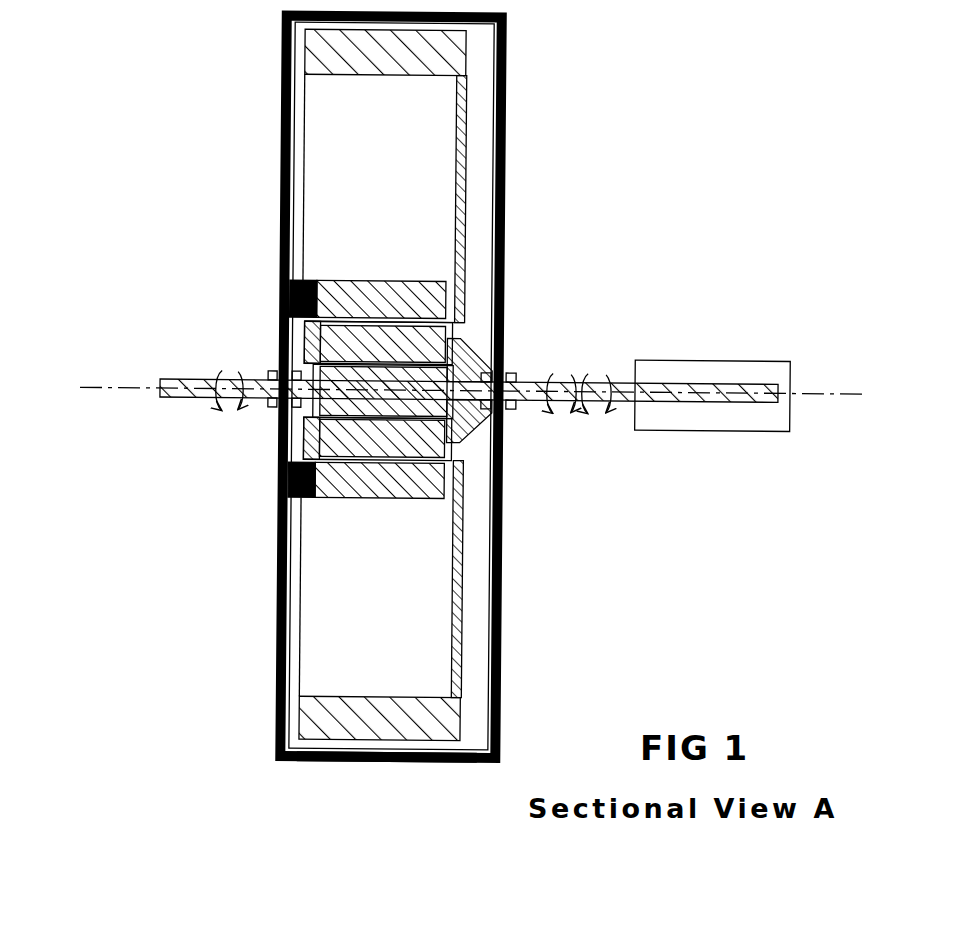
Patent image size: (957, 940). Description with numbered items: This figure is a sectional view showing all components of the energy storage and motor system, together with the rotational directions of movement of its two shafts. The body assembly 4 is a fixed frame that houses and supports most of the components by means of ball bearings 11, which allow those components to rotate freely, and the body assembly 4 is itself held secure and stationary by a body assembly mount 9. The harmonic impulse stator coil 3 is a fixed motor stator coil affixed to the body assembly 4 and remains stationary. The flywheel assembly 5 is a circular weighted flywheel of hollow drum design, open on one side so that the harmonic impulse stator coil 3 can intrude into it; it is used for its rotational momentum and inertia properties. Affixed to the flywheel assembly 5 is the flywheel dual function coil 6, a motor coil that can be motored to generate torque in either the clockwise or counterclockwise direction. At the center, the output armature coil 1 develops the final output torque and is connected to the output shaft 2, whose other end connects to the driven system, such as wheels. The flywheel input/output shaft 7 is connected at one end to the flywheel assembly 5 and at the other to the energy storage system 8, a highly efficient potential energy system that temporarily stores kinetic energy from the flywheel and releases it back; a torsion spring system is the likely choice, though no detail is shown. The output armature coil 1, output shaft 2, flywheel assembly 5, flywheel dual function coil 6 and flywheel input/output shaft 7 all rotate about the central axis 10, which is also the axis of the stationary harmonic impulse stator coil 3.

The output armature coil 1 is at (300, 435).
The output shaft 2 is at (187, 380).
The harmonic impulse stator coil 3 is at (342, 283).
The body assembly 4 is at (280, 123).
The flywheel assembly 5 is at (430, 47).
The flywheel dual function coil 6 is at (440, 336).
The flywheel input/output shaft 7 is at (530, 402).
The energy storage system 8 is at (718, 422).
The body assembly mount 9 is at (378, 764).
The central axis 10 is at (110, 394).
The ball bearing 11 is at (290, 362).